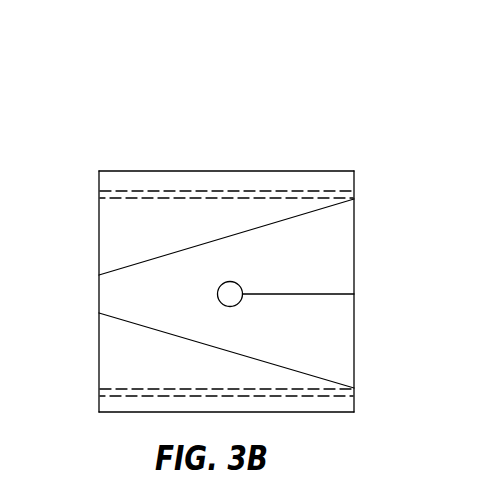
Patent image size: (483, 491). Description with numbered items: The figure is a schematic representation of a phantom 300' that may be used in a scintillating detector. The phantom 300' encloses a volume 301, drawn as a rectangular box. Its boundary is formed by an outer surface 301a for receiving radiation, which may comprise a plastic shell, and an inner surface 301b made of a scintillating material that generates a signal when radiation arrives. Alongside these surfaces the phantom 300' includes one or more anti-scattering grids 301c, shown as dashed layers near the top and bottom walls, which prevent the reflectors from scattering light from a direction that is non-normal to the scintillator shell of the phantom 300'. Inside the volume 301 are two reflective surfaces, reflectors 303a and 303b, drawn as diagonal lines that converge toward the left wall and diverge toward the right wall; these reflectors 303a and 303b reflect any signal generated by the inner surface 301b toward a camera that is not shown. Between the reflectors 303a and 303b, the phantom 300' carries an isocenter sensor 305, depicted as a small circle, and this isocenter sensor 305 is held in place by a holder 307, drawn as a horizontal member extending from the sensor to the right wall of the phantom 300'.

The phantom 300' is at (254, 209).
The volume 301 is at (338, 223).
The outer surface 301a is at (187, 171).
The inner surface 301b is at (328, 190).
The anti-scattering grid 301c is at (250, 197).
The reflector 303a is at (118, 265).
The reflector 303b is at (130, 320).
The isocenter sensor 305 is at (228, 288).
The holder 307 is at (335, 295).